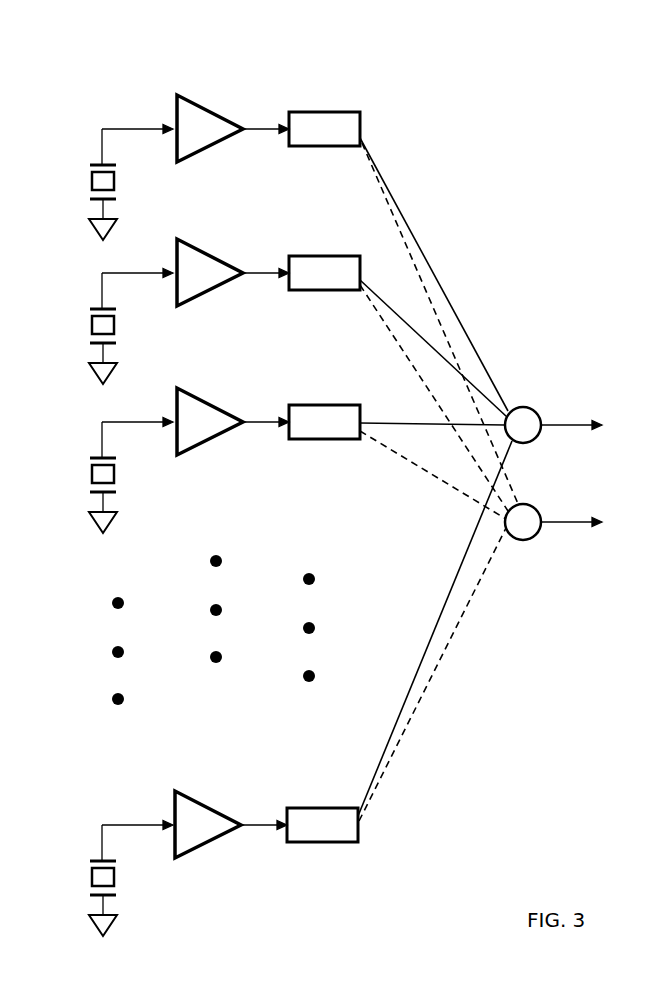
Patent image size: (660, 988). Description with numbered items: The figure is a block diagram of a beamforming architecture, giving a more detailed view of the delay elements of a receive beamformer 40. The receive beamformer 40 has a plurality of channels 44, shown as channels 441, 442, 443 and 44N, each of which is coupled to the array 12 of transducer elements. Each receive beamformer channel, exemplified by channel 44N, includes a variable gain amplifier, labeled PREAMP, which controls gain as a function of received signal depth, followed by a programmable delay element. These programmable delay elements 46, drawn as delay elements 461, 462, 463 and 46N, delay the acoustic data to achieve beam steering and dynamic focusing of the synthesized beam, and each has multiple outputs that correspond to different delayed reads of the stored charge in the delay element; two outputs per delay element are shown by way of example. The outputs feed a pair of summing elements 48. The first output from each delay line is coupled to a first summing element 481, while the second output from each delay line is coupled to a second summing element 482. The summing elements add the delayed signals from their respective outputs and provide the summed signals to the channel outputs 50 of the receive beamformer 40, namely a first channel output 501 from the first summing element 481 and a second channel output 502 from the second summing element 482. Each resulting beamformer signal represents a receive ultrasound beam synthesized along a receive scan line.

The array 12 is at (117, 118).
The receive beamformer 40 is at (493, 223).
The channels 44 is at (178, 476).
The first channel 441 is at (145, 128).
The second channel 442 is at (145, 272).
The third channel 443 is at (145, 421).
The Nth channel 44N is at (137, 824).
The programmable delay elements 46 is at (300, 445).
The first programmable delay element 461 is at (322, 112).
The second programmable delay element 462 is at (322, 256).
The third programmable delay element 463 is at (322, 405).
The Nth delay element 46N is at (312, 808).
The summing elements 48 is at (538, 447).
The first summing element 481 is at (542, 405).
The second summing element 482 is at (542, 503).
The channel outputs 50 is at (588, 443).
The first channel output 501 is at (605, 412).
The second channel output 502 is at (605, 520).